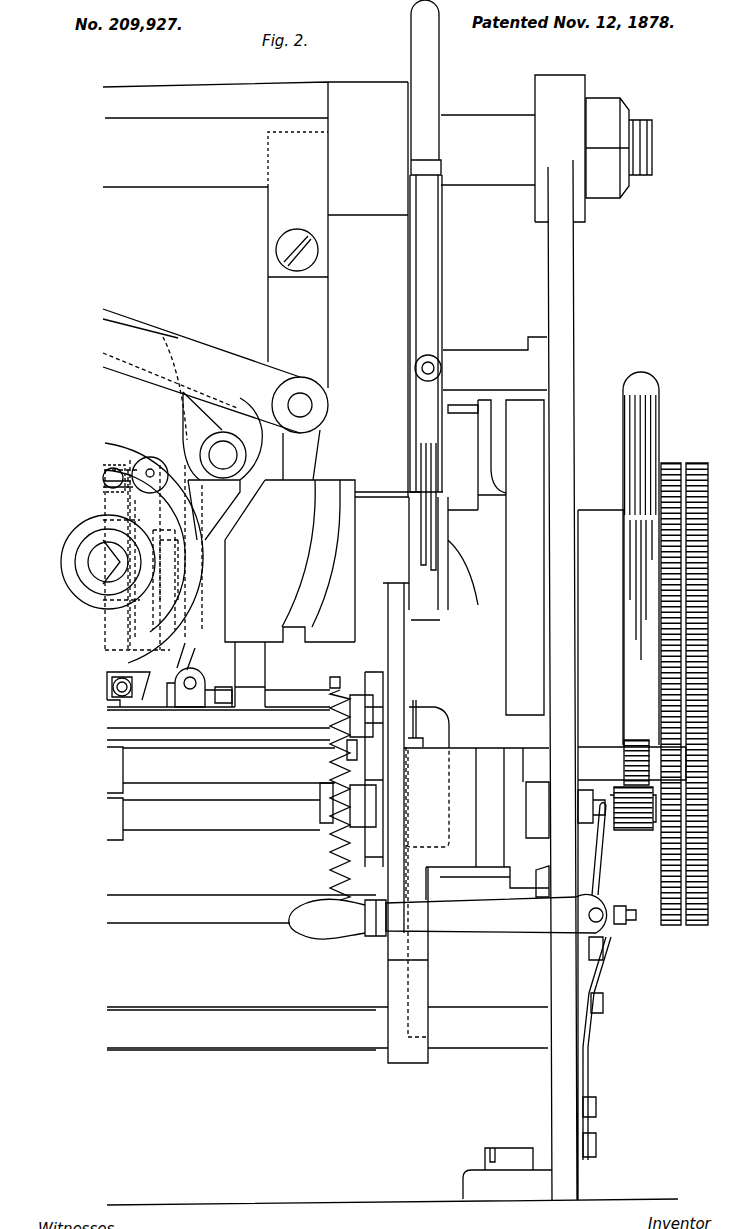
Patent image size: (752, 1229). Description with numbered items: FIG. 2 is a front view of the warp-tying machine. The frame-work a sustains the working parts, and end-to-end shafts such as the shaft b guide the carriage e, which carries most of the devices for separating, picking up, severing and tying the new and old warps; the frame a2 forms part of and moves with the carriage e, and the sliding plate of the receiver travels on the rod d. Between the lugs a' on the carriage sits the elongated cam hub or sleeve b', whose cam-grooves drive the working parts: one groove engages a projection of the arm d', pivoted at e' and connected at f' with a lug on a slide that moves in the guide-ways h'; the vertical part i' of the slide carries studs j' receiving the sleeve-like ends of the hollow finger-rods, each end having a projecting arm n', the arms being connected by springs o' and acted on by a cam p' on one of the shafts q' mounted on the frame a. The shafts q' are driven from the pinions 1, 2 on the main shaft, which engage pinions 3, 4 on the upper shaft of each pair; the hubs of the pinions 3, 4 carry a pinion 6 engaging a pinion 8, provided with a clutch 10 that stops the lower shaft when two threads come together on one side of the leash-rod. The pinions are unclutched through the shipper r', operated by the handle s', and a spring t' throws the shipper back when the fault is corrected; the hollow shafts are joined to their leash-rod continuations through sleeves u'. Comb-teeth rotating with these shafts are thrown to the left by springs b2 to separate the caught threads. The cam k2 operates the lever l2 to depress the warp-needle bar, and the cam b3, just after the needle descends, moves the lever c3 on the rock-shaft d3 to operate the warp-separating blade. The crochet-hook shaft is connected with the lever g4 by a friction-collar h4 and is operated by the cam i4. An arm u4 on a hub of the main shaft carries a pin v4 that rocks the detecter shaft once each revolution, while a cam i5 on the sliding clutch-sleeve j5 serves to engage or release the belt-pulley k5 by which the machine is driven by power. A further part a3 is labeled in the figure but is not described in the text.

The carriage e is at (255, 289).
The shaft b is at (488, 150).
The frame-work a is at (593, 637).
The lever c3 is at (211, 394).
The rock-shaft d3 is at (312, 405).
The lever l2 is at (222, 436).
The arm d' is at (132, 553).
The pivot e' is at (114, 468).
The cam i4 is at (171, 569).
The cam k2 is at (218, 510).
The cam hub b' is at (290, 561).
The springs b2 is at (302, 553).
The cam b3 is at (326, 565).
The lugs a' is at (380, 561).
The lever g4 is at (198, 655).
The friction-collar h4 is at (199, 688).
The connection f' is at (128, 686).
The guide-ways h' is at (218, 725).
The sleeves u' is at (115, 793).
The shafts q' is at (229, 789).
The springs o' is at (325, 788).
The arm n' is at (363, 761).
The cam p' is at (332, 780).
The frame a2 is at (454, 823).
The sliding clutch-sleeve j5 is at (432, 519).
The cam i5 is at (444, 558).
The arm u4 is at (478, 462).
The pin v4 is at (463, 418).
The belt-pulley k5 is at (525, 557).
The studs j' is at (420, 711).
The vertical part of slide i' is at (433, 803).
The block a3 is at (482, 822).
The pinion 6 is at (624, 745).
The pinion 8 is at (633, 818).
The clutch 10 is at (597, 801).
The pinion 3 is at (641, 624).
The pinion 1 is at (671, 683).
The pinion 2 is at (697, 682).
The pinion 4 is at (719, 857).
The shipper r' is at (607, 849).
The handle s' is at (462, 916).
The spring t' is at (603, 1048).
The rod d is at (327, 1028).